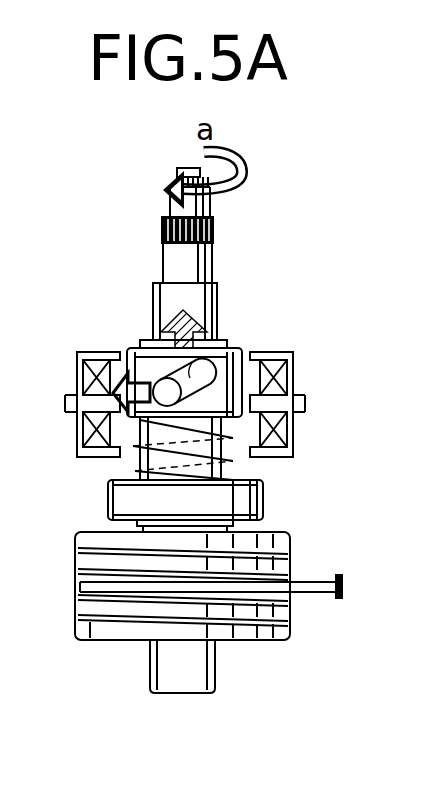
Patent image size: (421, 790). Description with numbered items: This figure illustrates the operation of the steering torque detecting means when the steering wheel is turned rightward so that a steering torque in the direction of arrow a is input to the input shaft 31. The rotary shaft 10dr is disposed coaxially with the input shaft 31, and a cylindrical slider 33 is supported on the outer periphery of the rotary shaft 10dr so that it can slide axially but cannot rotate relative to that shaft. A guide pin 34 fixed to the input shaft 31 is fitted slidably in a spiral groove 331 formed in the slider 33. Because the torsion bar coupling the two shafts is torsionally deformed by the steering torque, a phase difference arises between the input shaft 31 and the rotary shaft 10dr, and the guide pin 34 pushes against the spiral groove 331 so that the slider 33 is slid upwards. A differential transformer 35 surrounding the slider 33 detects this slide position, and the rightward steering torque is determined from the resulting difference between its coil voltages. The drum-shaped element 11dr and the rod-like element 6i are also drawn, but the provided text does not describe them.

The input shaft 31 is at (190, 262).
The cylindrical slider 33 is at (240, 344).
The spiral groove 331 is at (193, 375).
The guide pin 34 is at (167, 393).
The differential transformer 35 is at (312, 401).
The drum 11dr is at (280, 547).
The rod (5i) 6i is at (315, 588).
The rotary shaft 10dr is at (182, 672).